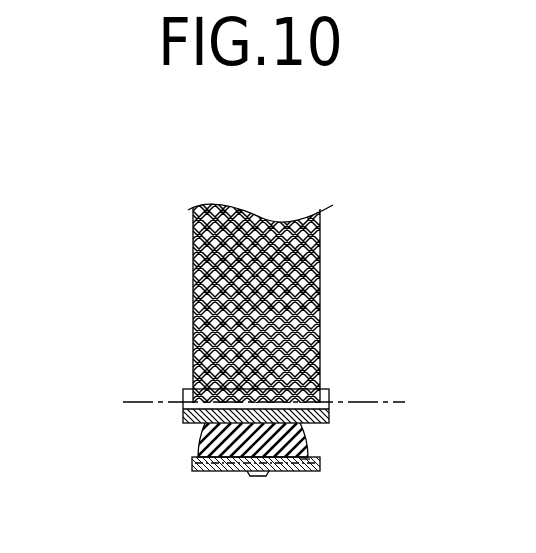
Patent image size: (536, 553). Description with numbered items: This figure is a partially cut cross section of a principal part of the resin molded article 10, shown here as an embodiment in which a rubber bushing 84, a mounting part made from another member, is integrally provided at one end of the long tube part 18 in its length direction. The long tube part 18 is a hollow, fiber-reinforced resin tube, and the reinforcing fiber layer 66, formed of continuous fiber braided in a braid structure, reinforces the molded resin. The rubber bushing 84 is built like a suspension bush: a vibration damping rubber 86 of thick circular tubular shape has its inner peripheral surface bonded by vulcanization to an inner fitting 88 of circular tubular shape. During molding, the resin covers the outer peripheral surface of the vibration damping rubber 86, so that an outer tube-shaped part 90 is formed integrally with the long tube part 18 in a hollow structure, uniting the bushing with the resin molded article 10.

The resin molded article 10 is at (383, 218).
The long tube part 18 is at (288, 335).
The rubber bushing 84 is at (75, 375).
The inner fitting 88 is at (183, 395).
The vibration damping rubber 86 is at (205, 437).
The outer tube-shaped part 90 is at (215, 465).
The reinforcing fiber layer 66 is at (302, 462).